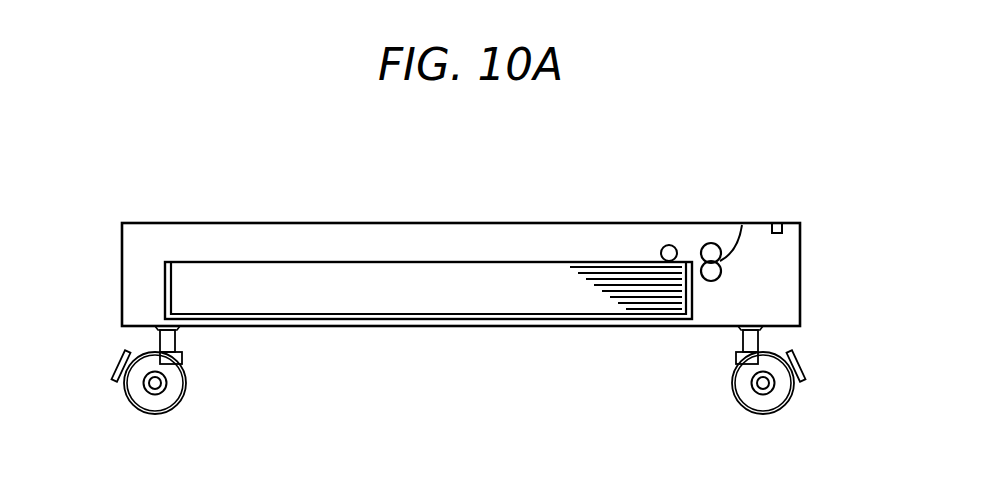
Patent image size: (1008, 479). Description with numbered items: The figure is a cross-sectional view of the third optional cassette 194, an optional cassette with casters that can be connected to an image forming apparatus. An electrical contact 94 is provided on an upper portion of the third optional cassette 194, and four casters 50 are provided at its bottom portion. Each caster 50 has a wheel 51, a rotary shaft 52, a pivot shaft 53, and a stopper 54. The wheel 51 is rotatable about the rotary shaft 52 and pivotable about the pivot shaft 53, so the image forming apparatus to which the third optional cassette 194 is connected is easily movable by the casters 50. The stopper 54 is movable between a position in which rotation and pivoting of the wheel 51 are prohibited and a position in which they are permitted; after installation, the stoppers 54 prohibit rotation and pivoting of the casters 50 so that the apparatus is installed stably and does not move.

The third optional cassette 194 is at (800, 250).
The electrical contact 94 is at (778, 222).
The caster 50 is at (277, 391).
The wheel 51 is at (185, 370).
The rotary shaft 52 is at (165, 394).
The pivot shaft 53 is at (177, 340).
The stopper 54 is at (118, 373).